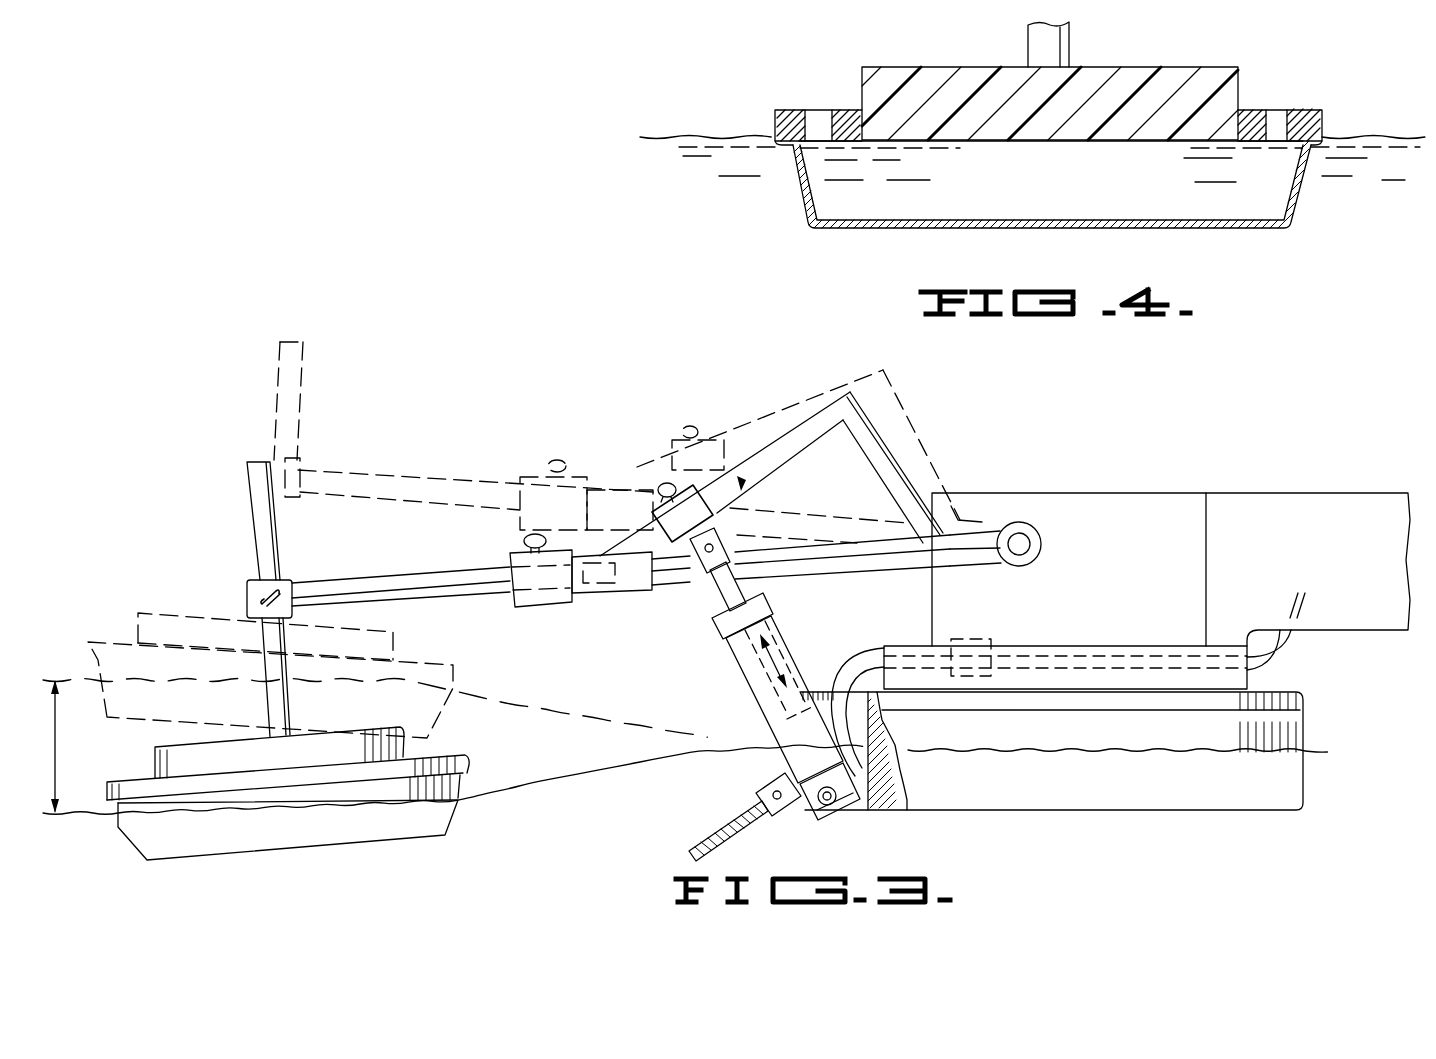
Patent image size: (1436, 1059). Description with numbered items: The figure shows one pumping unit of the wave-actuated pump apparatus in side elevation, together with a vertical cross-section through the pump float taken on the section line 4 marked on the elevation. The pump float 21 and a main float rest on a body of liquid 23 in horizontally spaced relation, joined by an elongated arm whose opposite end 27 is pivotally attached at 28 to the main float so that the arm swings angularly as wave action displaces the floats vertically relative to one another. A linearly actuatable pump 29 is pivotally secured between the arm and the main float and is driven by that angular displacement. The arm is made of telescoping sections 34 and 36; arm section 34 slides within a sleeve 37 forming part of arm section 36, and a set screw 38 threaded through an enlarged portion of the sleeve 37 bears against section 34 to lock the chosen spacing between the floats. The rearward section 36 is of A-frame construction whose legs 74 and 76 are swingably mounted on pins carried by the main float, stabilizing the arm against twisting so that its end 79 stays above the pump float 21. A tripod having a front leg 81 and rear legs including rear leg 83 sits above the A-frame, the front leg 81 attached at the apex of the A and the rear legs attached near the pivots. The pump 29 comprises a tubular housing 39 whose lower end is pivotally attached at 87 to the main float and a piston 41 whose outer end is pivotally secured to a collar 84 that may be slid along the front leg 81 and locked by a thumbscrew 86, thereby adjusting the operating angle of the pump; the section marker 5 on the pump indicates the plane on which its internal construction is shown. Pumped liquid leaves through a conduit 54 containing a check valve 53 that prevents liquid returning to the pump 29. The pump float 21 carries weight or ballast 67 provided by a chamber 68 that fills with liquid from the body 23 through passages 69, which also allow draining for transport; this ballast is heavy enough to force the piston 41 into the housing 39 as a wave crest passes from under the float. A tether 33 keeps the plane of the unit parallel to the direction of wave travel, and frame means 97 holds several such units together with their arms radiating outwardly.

In FIG. 4, the pump float 21 is at (886, 60).
In FIG. 3, the pump float 21 is at (452, 828).
In FIG. 4, the body of liquid 23 is at (721, 139).
In FIG. 3, the opposite end of arm 27 is at (969, 566).
In FIG. 3, the pivotal attachment 28 is at (1019, 518).
In FIG. 3, the linearly actuatable pump 29 is at (763, 688).
In FIG. 3, the tether 33 is at (730, 827).
In FIG. 3, the arm section 34 is at (395, 571).
In FIG. 3, the arm section 36 is at (631, 600).
In FIG. 3, the sleeve 37 is at (512, 607).
In FIG. 3, the set screw 38 is at (524, 539).
In FIG. 3, the tubular housing 39 is at (773, 727).
In FIG. 3, the piston 41 is at (717, 593).
In FIG. 3, the check valve 53 is at (990, 637).
In FIG. 3, the conduit 54 is at (867, 657).
In FIG. 4, the weight or ballast 67 is at (1200, 206).
In FIG. 4, the chamber 68 is at (1033, 195).
In FIG. 4, the passages 69 is at (820, 109).
In FIG. 3, the leg of A-frame 74 is at (862, 574).
In FIG. 3, the leg of A-frame 76 is at (767, 553).
In FIG. 3, the end of arm 79 is at (322, 580).
In FIG. 3, the front leg of tripod 81 is at (803, 423).
In FIG. 3, the rear leg of tripod 83 is at (883, 448).
In FIG. 3, the collar 84 is at (682, 513).
In FIG. 3, the thumbscrew 86 is at (658, 487).
In FIG. 3, the pivotal attachment 87 is at (832, 822).
In FIG. 3, the frame means 97 is at (1126, 513).
In FIG. 3, the section line 4- 4 is at (299, 688).
In FIG. 3, the section line 5- 5 is at (652, 462).